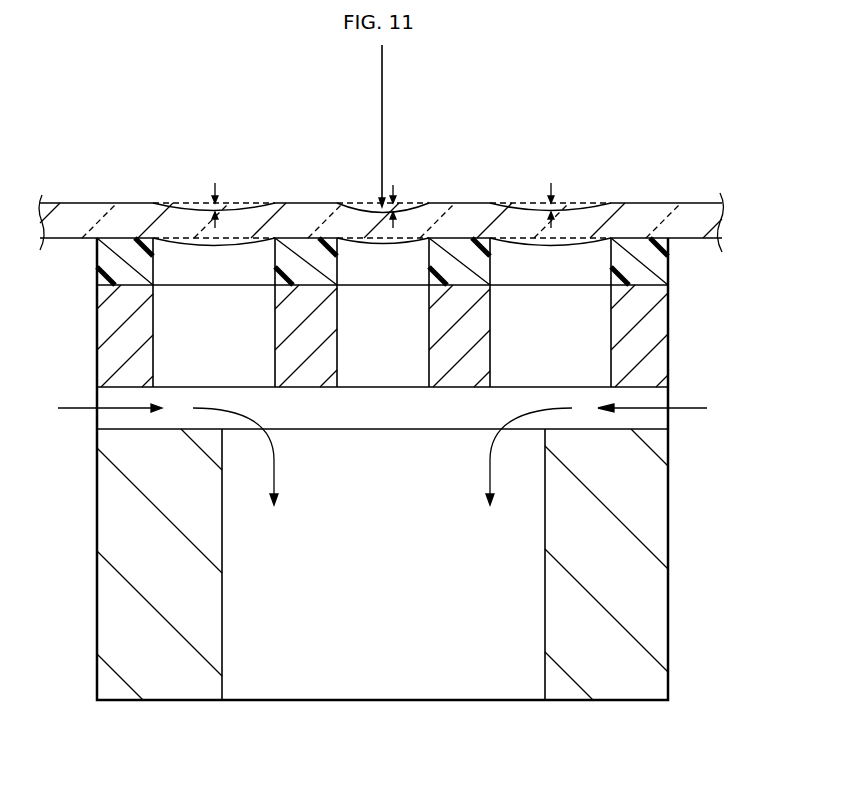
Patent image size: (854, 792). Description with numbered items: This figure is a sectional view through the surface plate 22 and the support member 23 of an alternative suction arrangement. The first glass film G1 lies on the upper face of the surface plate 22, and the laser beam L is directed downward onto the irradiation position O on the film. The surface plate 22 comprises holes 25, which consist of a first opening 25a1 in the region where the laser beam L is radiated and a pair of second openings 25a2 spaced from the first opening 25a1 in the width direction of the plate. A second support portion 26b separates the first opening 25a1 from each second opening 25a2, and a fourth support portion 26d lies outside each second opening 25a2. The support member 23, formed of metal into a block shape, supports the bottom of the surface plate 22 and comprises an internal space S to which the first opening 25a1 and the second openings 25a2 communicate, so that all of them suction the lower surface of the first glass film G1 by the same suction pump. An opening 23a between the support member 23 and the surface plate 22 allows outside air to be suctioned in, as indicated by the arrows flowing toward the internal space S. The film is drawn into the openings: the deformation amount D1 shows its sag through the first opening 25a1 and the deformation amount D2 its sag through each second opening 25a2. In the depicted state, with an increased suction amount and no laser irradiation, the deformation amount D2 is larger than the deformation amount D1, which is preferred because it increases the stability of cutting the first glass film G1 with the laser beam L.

The laser beam L is at (383, 92).
The first glass film G1 is at (86, 202).
The irradiation position O is at (378, 206).
The deformation amount D1 is at (396, 224).
The deformation amount D2 is at (206, 200).
The first opening 25a1 is at (428, 236).
The second opening 25a2 is at (269, 202).
The second support portion 26b is at (308, 236).
The fourth support portion 26d is at (123, 236).
The hole 25 is at (275, 330).
The surface plate 22 is at (686, 306).
The opening 23a is at (672, 400).
The support member 23 is at (652, 524).
The internal space S is at (541, 578).